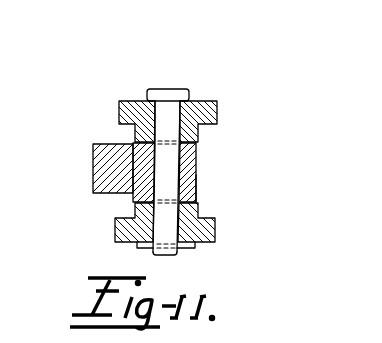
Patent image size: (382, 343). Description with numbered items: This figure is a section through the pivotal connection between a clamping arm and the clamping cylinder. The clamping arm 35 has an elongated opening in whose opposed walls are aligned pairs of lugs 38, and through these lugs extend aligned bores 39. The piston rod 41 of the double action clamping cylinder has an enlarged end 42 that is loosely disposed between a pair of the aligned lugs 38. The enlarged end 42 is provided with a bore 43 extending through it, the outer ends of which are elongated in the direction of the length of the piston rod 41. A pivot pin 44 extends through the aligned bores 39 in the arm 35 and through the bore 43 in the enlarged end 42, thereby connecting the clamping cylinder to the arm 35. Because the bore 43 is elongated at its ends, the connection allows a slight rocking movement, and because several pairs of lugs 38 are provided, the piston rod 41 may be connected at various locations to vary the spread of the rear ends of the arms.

The clamping arm 35 is at (124, 100).
The pivot pin 44 is at (183, 95).
The lug 38 is at (135, 133).
The piston rod 41 is at (93, 164).
The enlarged end 42 is at (197, 166).
The bore 43 is at (197, 188).
The bore 39 is at (177, 231).